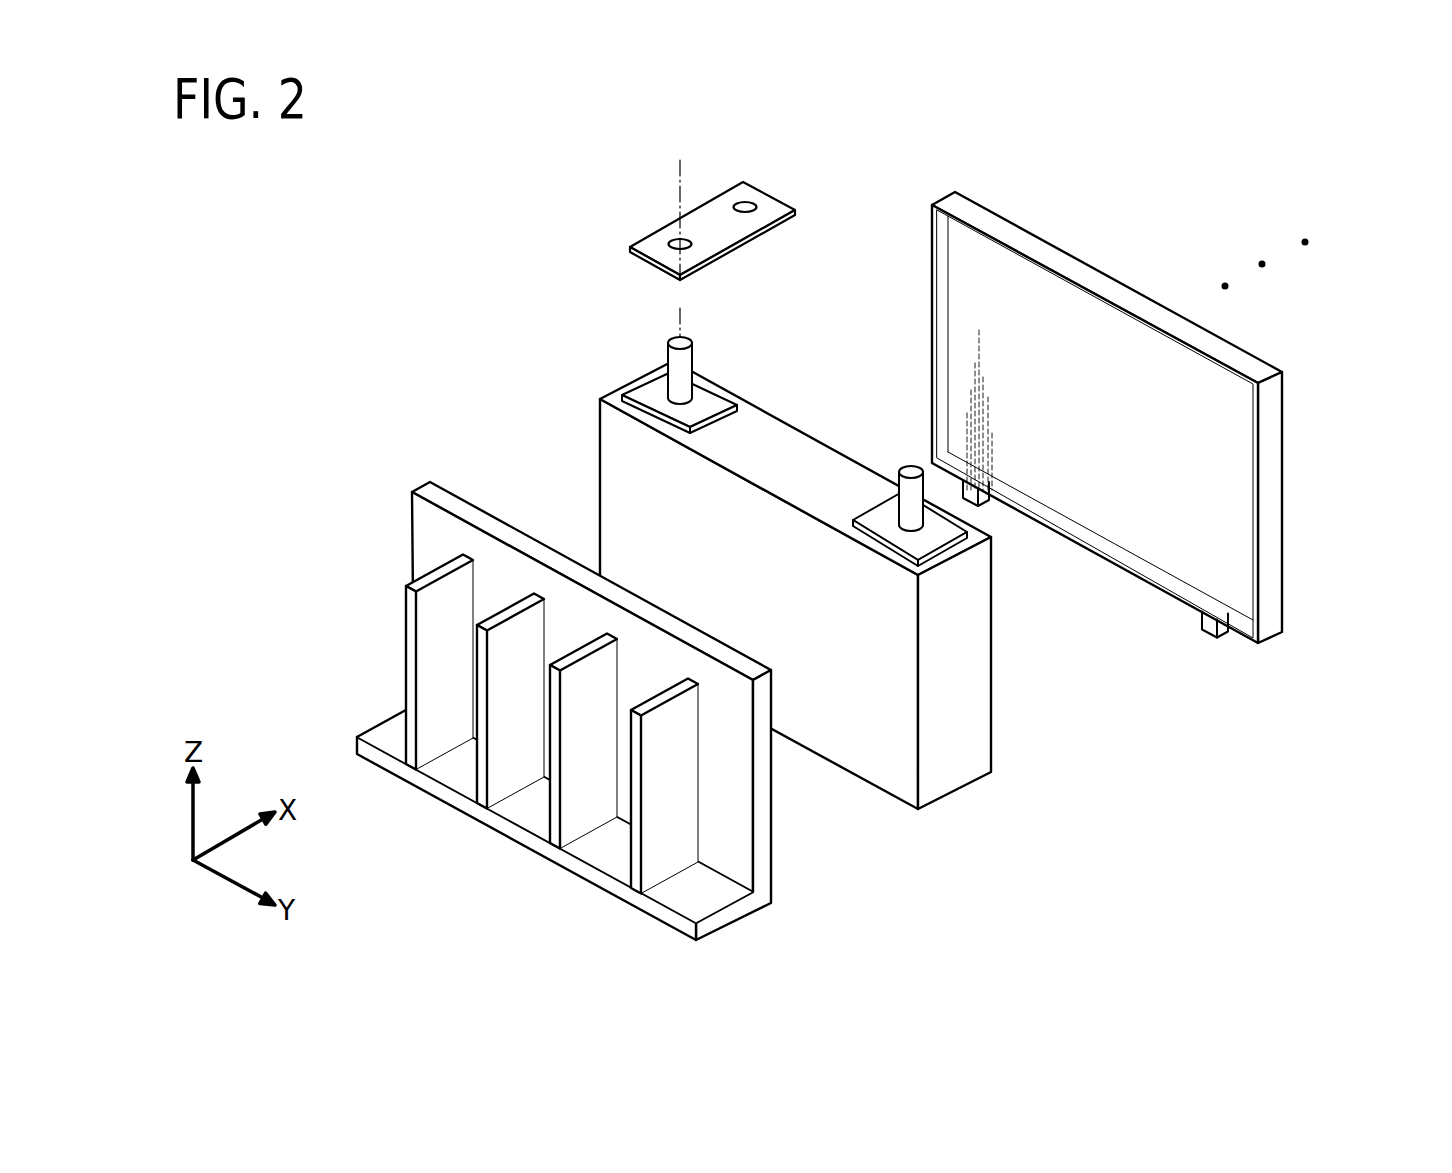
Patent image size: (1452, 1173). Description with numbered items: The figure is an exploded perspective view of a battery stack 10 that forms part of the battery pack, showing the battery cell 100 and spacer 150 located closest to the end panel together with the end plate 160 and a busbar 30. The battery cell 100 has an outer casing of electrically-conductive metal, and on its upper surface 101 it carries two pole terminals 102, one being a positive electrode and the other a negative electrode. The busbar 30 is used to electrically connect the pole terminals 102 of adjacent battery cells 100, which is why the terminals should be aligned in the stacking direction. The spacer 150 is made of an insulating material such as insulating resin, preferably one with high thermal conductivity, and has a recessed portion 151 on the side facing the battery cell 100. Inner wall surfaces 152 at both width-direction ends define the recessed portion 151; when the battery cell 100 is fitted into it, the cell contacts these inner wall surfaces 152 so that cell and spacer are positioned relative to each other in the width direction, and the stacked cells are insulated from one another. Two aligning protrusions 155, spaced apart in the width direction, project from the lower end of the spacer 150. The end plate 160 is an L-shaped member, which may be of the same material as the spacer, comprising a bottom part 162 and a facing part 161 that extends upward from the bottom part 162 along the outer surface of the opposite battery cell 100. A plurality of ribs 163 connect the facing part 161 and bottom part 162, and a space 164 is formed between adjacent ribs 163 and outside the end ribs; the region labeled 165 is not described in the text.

The battery stack 10 is at (488, 367).
The busbar 30 is at (718, 231).
The battery cell 100 is at (994, 747).
The upper surface 101 is at (800, 462).
The pole terminal 102 is at (676, 376).
The spacer 150 is at (1285, 582).
The recessed portion 151 is at (1097, 317).
The inner wall surface 152 is at (941, 307).
The aligning protrusion 155 is at (992, 505).
The end plate 160 is at (780, 876).
The facing part 161 is at (763, 828).
The bottom part 162 is at (742, 922).
The rib 163 is at (413, 632).
The space 164 is at (541, 740).
The cell accommodating groove 165 is at (556, 849).